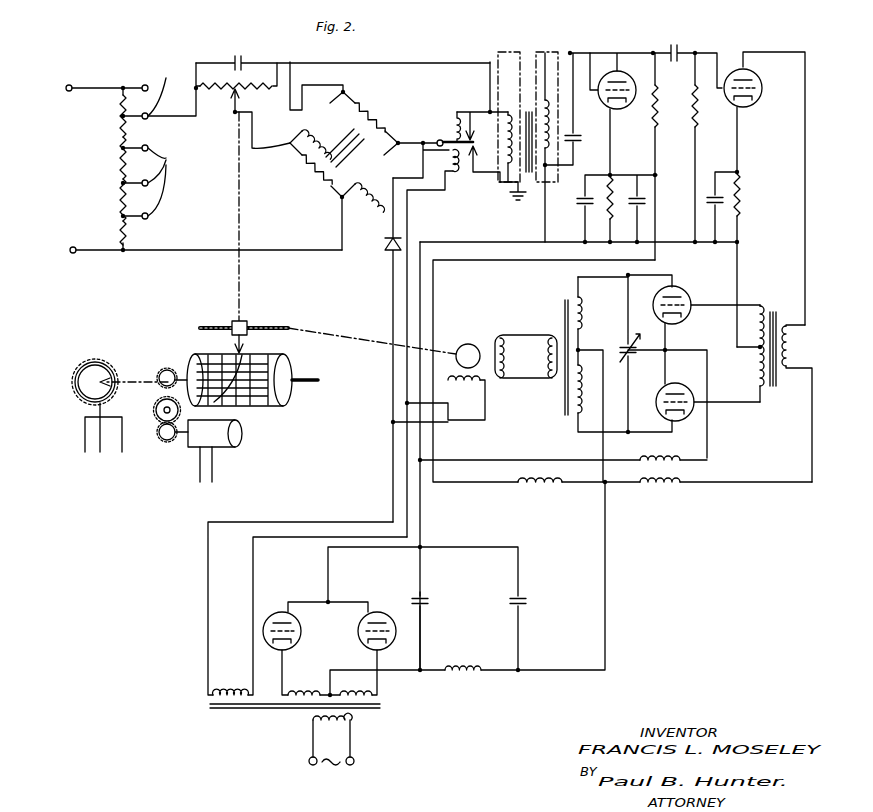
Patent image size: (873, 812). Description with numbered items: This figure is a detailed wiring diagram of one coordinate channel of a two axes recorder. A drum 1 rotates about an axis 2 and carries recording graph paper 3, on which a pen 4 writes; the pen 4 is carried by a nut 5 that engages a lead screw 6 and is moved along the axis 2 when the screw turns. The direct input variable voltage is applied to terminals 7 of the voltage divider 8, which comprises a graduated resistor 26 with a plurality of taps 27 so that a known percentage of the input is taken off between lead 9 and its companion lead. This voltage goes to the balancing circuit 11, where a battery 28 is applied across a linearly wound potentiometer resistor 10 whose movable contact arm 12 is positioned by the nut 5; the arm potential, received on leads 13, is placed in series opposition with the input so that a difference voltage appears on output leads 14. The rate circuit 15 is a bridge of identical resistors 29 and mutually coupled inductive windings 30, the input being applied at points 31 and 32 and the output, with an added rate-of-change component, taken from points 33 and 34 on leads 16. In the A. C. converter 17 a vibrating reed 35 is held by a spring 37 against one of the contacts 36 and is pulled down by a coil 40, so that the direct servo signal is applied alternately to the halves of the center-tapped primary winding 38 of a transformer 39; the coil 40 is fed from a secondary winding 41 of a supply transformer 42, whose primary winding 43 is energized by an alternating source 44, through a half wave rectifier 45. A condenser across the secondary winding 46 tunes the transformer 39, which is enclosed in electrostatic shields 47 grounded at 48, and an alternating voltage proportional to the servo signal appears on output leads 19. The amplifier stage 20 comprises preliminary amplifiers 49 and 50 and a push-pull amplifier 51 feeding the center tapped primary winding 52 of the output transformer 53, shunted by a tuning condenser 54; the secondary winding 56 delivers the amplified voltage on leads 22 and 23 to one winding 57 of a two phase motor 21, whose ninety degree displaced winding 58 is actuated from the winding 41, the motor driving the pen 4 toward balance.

The drum 1 is at (288, 368).
The axis 2 is at (306, 383).
The recording graph paper 3 is at (262, 408).
The pen 4 is at (244, 344).
The nut 5 is at (247, 323).
The lead screw 6 is at (216, 323).
The input terminal 7 is at (69, 85).
The voltage divider 8 is at (100, 154).
The lead 9 is at (178, 118).
The potentiometer resistor 10 is at (206, 88).
The balancing circuit 11 is at (162, 279).
The movable contact arm 12 is at (246, 110).
The lead 13 is at (195, 86).
The output lead 14 is at (318, 85).
The rate circuit 15 is at (340, 151).
The output lead 16 is at (428, 60).
The A. C. converter 17 is at (470, 102).
The output lead 19 is at (568, 53).
The amplifier stage 20 is at (778, 300).
The two phase motor 21 is at (462, 344).
The output lead 22 is at (385, 383).
The output lead 23 is at (528, 380).
The resistor 26 is at (120, 200).
The taps 27 is at (155, 136).
The battery 28 is at (239, 55).
The resistor 29 is at (376, 118).
The inductive winding 30 is at (392, 104).
The bridge point 31 is at (348, 91).
The bridge point 32 is at (339, 203).
The bridge point 33 is at (290, 145).
The bridge point 34 is at (398, 147).
The vibrating conductive reed 35 is at (441, 139).
The contact 36 is at (473, 125).
The spring 37 is at (459, 118).
The primary winding 38 is at (506, 155).
The transformer 39 is at (520, 102).
The coil 40 is at (450, 180).
The secondary winding 41 is at (208, 692).
The transformer 42 is at (510, 50).
The primary winding 43 is at (355, 724).
The source of alternating voltage 44 is at (331, 773).
The half wave rectifier 45 is at (577, 141).
The secondary winding 46 is at (552, 128).
The electrostatic shield 47 is at (546, 50).
The ground 48 is at (514, 206).
The preliminary amplifier 49 is at (631, 134).
The preliminary amplifier 50 is at (772, 132).
The push-pull amplifier 51 is at (697, 348).
The primary winding 52 is at (590, 348).
The output transformer 53 is at (550, 438).
The tuning condenser 54 is at (632, 358).
The secondary winding 56 is at (548, 352).
The motor winding 57 is at (500, 334).
The motor winding 58 is at (463, 388).